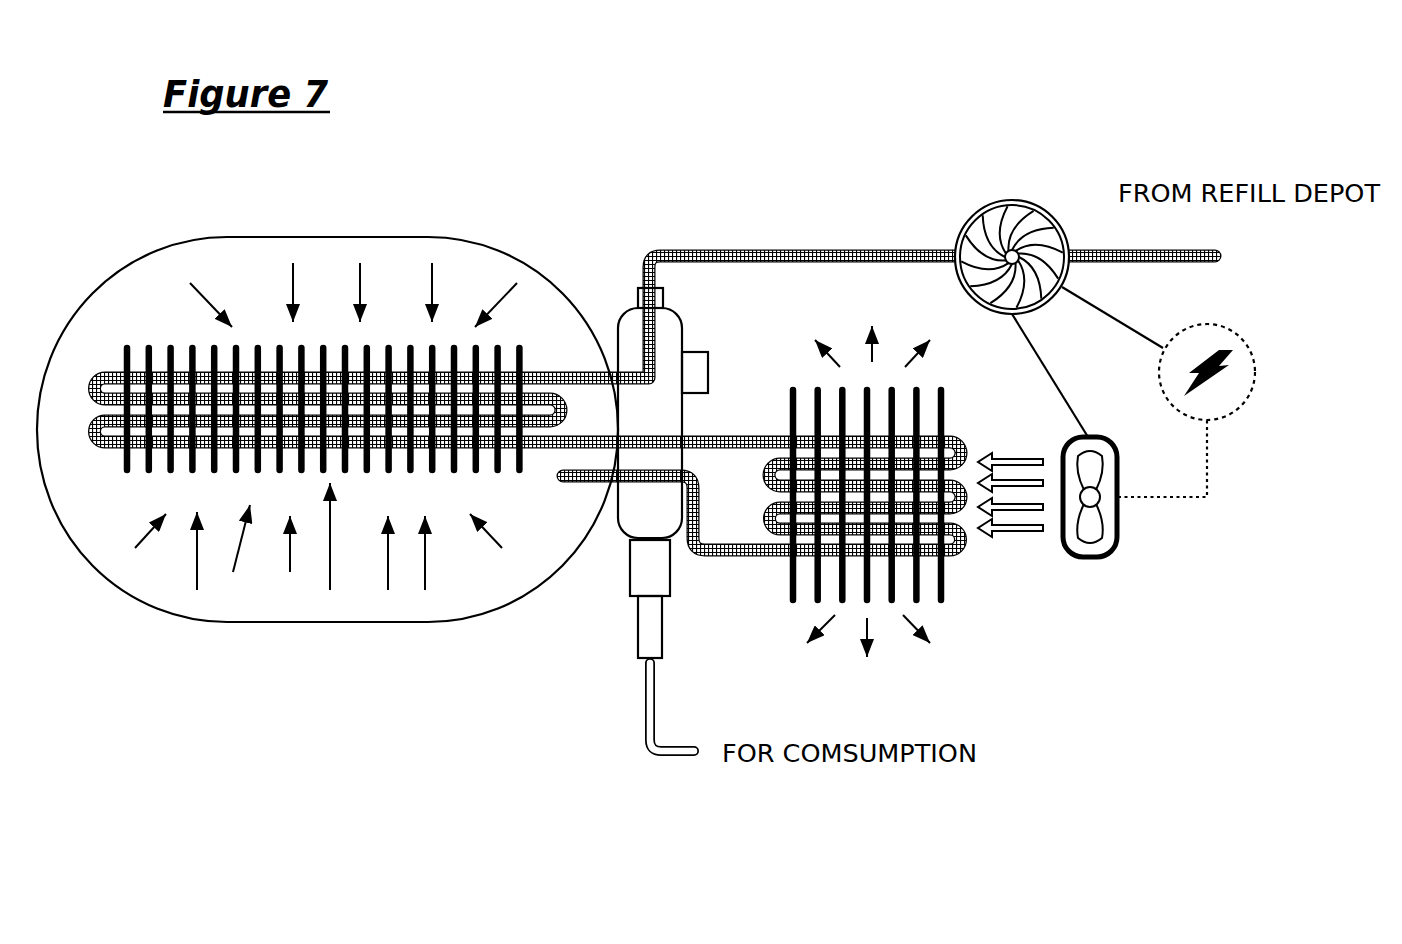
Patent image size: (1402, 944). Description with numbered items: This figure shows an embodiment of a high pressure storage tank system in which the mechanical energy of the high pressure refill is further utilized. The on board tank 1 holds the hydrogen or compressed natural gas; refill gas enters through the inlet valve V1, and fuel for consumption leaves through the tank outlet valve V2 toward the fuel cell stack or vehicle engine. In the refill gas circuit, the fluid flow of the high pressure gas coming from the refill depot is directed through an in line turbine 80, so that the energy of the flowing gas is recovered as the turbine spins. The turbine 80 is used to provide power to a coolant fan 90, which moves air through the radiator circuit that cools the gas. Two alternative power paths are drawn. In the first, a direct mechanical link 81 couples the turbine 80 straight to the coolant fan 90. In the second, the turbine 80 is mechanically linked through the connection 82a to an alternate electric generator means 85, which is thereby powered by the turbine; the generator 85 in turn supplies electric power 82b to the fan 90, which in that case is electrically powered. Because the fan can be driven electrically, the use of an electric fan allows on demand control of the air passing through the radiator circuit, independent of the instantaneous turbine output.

The on board tank 1 is at (158, 610).
The in line turbine 80 is at (1012, 200).
The direct mechanical link 81 is at (1041, 362).
The mechanical link to generator 82a is at (1142, 333).
The electric power connection 82b is at (1207, 480).
The electric generator means 85 is at (1255, 372).
The coolant fan 90 is at (1095, 557).
The inlet valve V1 is at (693, 352).
The tank outlet valve V2 is at (670, 583).